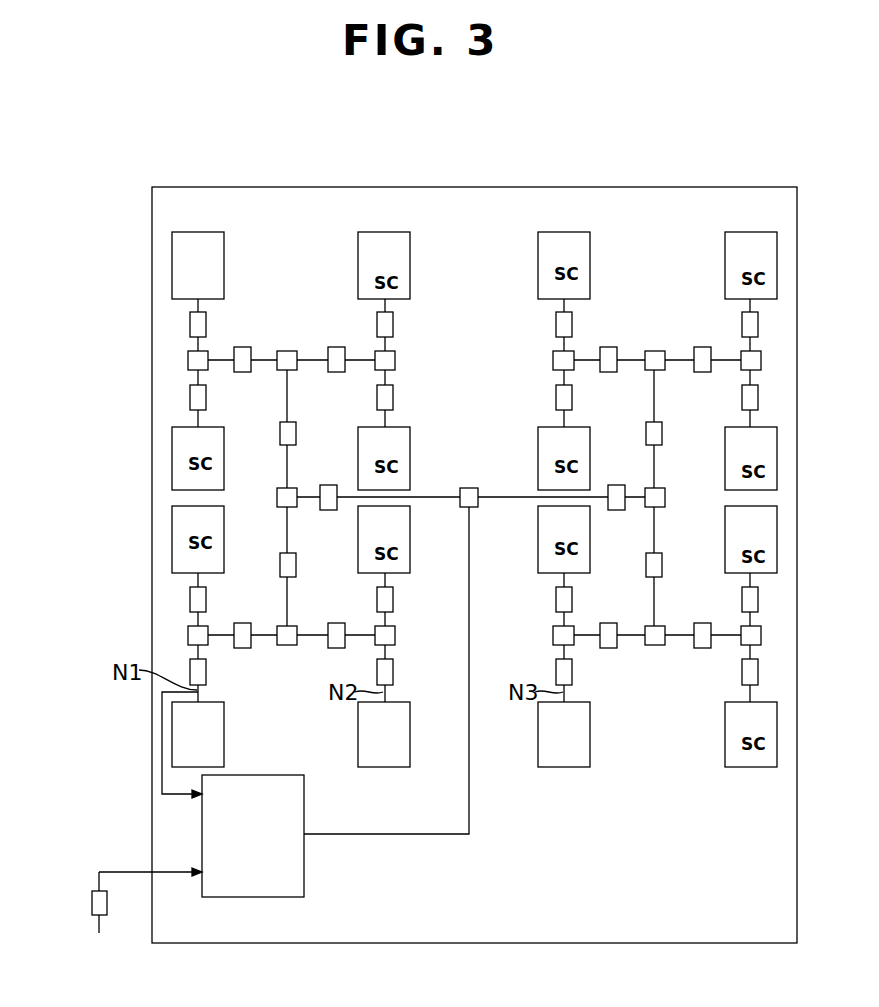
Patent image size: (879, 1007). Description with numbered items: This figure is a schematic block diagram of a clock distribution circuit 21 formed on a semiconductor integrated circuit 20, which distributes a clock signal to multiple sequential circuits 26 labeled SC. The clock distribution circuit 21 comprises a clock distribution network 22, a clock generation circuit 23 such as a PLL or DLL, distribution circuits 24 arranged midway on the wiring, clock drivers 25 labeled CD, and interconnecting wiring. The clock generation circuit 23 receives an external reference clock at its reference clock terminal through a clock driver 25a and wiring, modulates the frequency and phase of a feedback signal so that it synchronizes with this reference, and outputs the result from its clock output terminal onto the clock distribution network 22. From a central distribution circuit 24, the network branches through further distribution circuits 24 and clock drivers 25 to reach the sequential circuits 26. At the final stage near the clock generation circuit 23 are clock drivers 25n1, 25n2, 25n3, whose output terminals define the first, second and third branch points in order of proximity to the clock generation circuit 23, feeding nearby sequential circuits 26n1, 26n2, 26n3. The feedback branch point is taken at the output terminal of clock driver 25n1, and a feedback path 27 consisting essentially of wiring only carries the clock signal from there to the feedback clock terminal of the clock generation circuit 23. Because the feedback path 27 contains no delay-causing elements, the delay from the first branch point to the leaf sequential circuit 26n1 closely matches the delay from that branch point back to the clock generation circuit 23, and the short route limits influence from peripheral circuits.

The semiconductor device 20 is at (182, 187).
The clock distribution circuit 21 is at (493, 230).
The clock distribution network 22 is at (428, 836).
The clock generation circuit 23 is at (252, 898).
The distribution circuit 24 is at (297, 487).
The clock driver 25 is at (336, 347).
The reference clock driver 25a is at (92, 900).
The clock driver 25n1 is at (190, 665).
The clock driver 25n2 is at (393, 672).
The clock driver 25n3 is at (573, 672).
The sequential circuit 26 is at (224, 240).
The sequential circuit 26n1 is at (224, 752).
The sequential circuit 26n2 is at (357, 725).
The sequential circuit 26n3 is at (591, 735).
The feedback path 27 is at (162, 745).